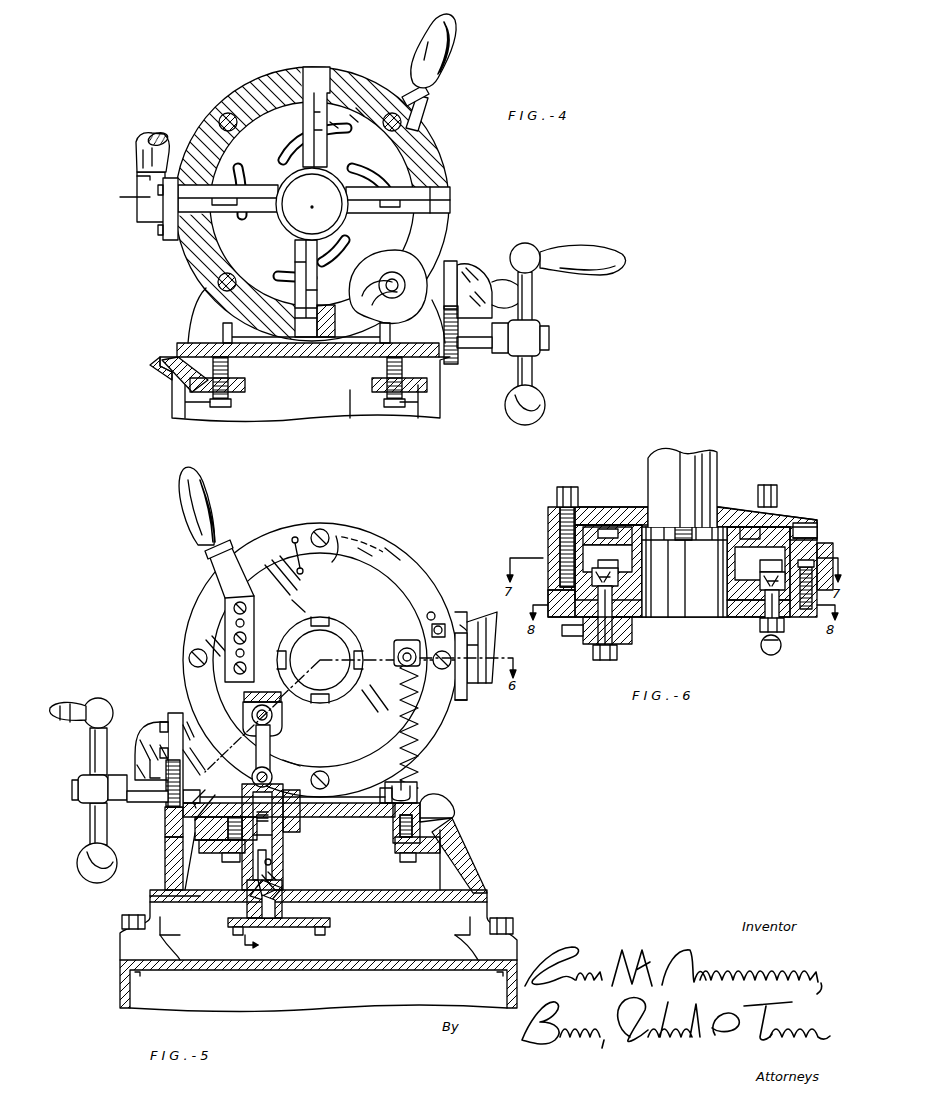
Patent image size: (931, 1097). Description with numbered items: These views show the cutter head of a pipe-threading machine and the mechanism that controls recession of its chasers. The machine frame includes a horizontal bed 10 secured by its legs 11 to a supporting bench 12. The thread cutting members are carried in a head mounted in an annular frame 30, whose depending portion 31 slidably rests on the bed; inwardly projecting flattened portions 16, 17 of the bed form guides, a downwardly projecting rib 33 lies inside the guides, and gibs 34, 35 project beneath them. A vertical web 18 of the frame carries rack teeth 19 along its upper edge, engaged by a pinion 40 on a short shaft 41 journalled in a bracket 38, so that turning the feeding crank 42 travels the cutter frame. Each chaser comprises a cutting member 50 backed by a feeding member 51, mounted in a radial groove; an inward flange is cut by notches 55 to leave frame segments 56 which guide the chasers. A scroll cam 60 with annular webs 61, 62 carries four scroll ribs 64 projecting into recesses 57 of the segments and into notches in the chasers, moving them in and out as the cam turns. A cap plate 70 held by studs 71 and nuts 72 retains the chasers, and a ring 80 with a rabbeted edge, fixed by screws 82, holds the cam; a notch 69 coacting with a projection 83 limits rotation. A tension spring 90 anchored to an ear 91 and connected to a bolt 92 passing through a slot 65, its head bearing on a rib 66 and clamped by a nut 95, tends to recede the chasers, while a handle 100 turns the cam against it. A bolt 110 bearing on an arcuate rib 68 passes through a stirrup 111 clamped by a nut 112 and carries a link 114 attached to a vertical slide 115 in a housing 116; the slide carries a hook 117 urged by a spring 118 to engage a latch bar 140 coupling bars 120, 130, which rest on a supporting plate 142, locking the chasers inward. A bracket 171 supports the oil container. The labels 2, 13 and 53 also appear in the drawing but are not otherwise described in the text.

In FIG. 5, the screw 2 is at (190, 657).
In FIG. 5, the horizontal bed 10 is at (376, 902).
In FIG. 5, the legs 11 is at (526, 912).
In FIG. 5, the supporting bench 12 is at (132, 990).
In FIG. 5, the section line / plate 13 is at (257, 826).
In FIG. 4, the flattened portion 16 is at (420, 402).
In FIG. 5, the flattened portion 16 is at (212, 856).
In FIG. 4, the flattened portion 17 is at (180, 392).
In FIG. 5, the flattened portion 17 is at (445, 838).
In FIG. 5, the vertical web 18 is at (165, 850).
In FIG. 5, the rack teeth 19 is at (165, 828).
In FIG. 4, the annular frame 30 is at (392, 90).
In FIG. 6, the annular frame 30 is at (548, 535).
In FIG. 4, the depending portion 31 is at (300, 357).
In FIG. 5, the depending portion 31 is at (352, 817).
In FIG. 4, the rib 33 is at (232, 373).
In FIG. 5, the rib 33 is at (240, 856).
In FIG. 4, the gib 34 is at (410, 392).
In FIG. 5, the gib 34 is at (215, 854).
In FIG. 4, the gib 35 is at (210, 392).
In FIG. 5, the gib 35 is at (400, 852).
In FIG. 4, the bracket 38 is at (470, 286).
In FIG. 5, the bracket 38 is at (146, 728).
In FIG. 4, the pinion 40 is at (458, 352).
In FIG. 5, the pinion 40 is at (165, 806).
In FIG. 4, the short shaft 41 is at (552, 338).
In FIG. 5, the short shaft 41 is at (72, 793).
In FIG. 4, the feeding crank 42 is at (585, 248).
In FIG. 5, the feeding crank 42 is at (84, 716).
In FIG. 4, the cutting member 50 is at (435, 180).
In FIG. 5, the cutting member 50 is at (330, 620).
In FIG. 6, the cutting member 50 is at (795, 520).
In FIG. 4, the feeding member 51 is at (243, 170).
In FIG. 5, the feeding member 51 is at (293, 605).
In FIG. 4, the jaw key 53 is at (243, 214).
In FIG. 4, the notches 55 is at (440, 194).
In FIG. 6, the notches 55 is at (806, 520).
In FIG. 5, the frame segments 56 is at (392, 570).
In FIG. 6, the frame segments 56 is at (600, 527).
In FIG. 6, the recesses 57 is at (618, 507).
In FIG. 4, the scroll cam 60 is at (318, 212).
In FIG. 6, the scroll cam 60 is at (745, 556).
In FIG. 6, the annular web 61 is at (742, 617).
In FIG. 6, the annular web 62 is at (768, 574).
In FIG. 4, the scroll ribs 64 is at (250, 160).
In FIG. 6, the scroll ribs 64 is at (748, 507).
In FIG. 5, the slot 65 is at (397, 650).
In FIG. 6, the rib 66 is at (684, 571).
In FIG. 6, the arcuate rib 68 is at (620, 566).
In FIG. 5, the notch 69 is at (398, 563).
In FIG. 6, the cap plate 70 is at (585, 507).
In FIG. 4, the studs 71 is at (220, 118).
In FIG. 6, the studs 71 is at (568, 485).
In FIG. 6, the nuts 72 is at (556, 507).
In FIG. 5, the ring 80 is at (338, 522).
In FIG. 6, the ring 80 is at (560, 617).
In FIG. 5, the screws 82 is at (189, 652).
In FIG. 6, the screws 82 is at (806, 612).
In FIG. 5, the projection 83 is at (432, 616).
In FIG. 5, the tension spring 90 is at (398, 715).
In FIG. 5, the ear 91 is at (418, 792).
In FIG. 5, the bolt 92 is at (405, 646).
In FIG. 6, the bolt 92 is at (762, 625).
In FIG. 6, the nut 95 is at (778, 650).
In FIG. 4, the handle 100 is at (452, 40).
In FIG. 5, the handle 100 is at (212, 505).
In FIG. 5, the bolt 110 is at (274, 715).
In FIG. 6, the bolt 110 is at (605, 660).
In FIG. 6, the stirrup 111 is at (632, 640).
In FIG. 6, the nut 112 is at (617, 656).
In FIG. 5, the link 114 is at (272, 748).
In FIG. 6, the link 114 is at (573, 640).
In FIG. 5, the vertical slide 115 is at (274, 842).
In FIG. 5, the housing 116 is at (284, 824).
In FIG. 5, the hook 117 is at (276, 864).
In FIG. 5, the spring 118 is at (252, 782).
In FIG. 5, the bar 120 is at (240, 912).
In FIG. 5, the bar 130 is at (282, 890).
In FIG. 5, the latch bar 140 is at (289, 875).
In FIG. 5, the supporting plate 142 is at (330, 923).
In FIG. 4, the bracket 171 is at (135, 197).
In FIG. 5, the bracket 171 is at (490, 652).